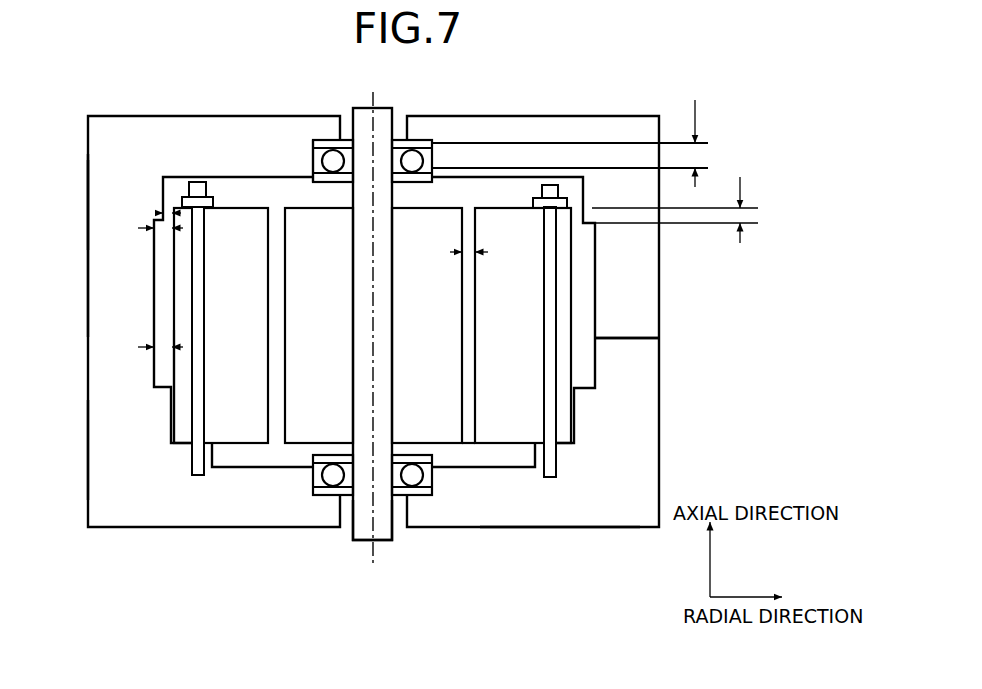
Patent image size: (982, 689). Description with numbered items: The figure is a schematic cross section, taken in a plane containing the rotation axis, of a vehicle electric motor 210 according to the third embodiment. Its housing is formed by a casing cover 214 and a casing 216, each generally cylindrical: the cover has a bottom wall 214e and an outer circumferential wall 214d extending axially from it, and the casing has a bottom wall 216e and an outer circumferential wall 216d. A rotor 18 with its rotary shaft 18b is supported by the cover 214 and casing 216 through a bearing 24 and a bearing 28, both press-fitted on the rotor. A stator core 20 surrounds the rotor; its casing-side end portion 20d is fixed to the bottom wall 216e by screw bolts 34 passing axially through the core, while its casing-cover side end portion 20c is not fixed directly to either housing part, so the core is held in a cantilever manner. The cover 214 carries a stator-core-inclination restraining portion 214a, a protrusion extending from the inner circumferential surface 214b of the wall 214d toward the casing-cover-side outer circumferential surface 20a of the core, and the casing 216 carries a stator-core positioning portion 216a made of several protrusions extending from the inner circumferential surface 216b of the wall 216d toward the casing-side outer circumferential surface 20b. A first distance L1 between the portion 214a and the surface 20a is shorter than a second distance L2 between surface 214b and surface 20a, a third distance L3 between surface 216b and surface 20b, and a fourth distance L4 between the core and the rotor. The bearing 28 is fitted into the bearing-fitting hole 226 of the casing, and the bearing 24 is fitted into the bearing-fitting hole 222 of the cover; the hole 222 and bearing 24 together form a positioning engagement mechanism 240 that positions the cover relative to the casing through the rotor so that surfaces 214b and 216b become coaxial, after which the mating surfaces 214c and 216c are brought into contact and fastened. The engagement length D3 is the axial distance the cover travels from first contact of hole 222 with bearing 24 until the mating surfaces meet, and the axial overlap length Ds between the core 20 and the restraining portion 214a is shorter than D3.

The vehicle electric motor 210 is at (688, 82).
The casing cover 214 is at (157, 133).
The stator-core-inclination restraining portion 214a is at (168, 177).
The inner circumferential surface 214b is at (585, 278).
The mating surface 214c is at (605, 347).
The outer circumferential wall 214d is at (105, 203).
The bottom wall 214e is at (553, 130).
The casing 216 is at (223, 510).
The stator-core positioning portion 216a is at (178, 405).
The inner circumferential surface 216b is at (585, 388).
The mating surface 216c is at (642, 327).
The outer circumferential wall 216d is at (105, 445).
The bottom wall 216e is at (552, 517).
The rotor 18 is at (443, 410).
The rotary shaft 18b is at (355, 528).
The stator core 20 is at (497, 408).
The casing-cover-side outer circumferential surface 20a is at (168, 254).
The casing-side outer circumferential surface 20b is at (168, 372).
The casing-cover side end portion 20c is at (240, 198).
The casing-side end portion 20d is at (570, 456).
The bearing 24 is at (348, 148).
The bearing 28 is at (398, 488).
The bearing-fitting hole 222 is at (325, 137).
The bearing-fitting hole 226 is at (325, 498).
The positioning engagement mechanism 240 is at (273, 82).
The screw bolts 34 is at (197, 462).
The first distance L1 is at (168, 211).
The second distance L2 is at (160, 230).
The third distance L3 is at (160, 350).
The fourth distance L4 is at (467, 253).
The engagement length D3 is at (683, 143).
The length of the overlapping portion Ds is at (675, 210).